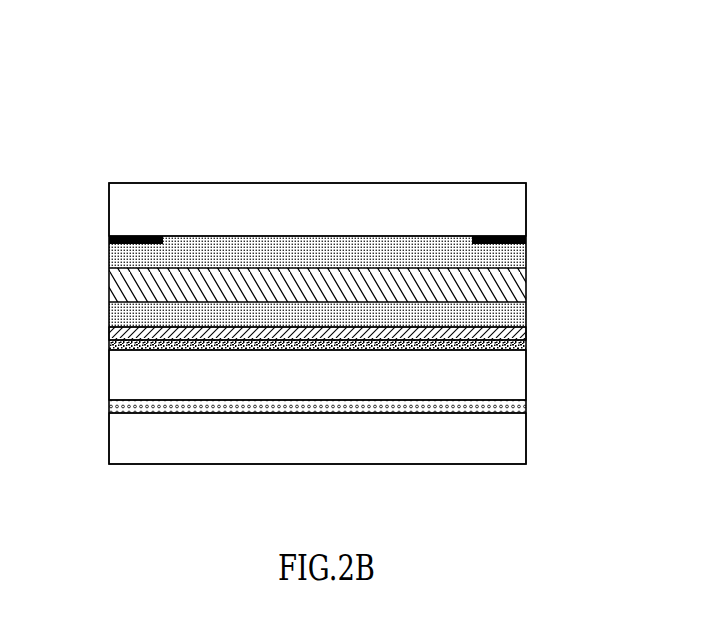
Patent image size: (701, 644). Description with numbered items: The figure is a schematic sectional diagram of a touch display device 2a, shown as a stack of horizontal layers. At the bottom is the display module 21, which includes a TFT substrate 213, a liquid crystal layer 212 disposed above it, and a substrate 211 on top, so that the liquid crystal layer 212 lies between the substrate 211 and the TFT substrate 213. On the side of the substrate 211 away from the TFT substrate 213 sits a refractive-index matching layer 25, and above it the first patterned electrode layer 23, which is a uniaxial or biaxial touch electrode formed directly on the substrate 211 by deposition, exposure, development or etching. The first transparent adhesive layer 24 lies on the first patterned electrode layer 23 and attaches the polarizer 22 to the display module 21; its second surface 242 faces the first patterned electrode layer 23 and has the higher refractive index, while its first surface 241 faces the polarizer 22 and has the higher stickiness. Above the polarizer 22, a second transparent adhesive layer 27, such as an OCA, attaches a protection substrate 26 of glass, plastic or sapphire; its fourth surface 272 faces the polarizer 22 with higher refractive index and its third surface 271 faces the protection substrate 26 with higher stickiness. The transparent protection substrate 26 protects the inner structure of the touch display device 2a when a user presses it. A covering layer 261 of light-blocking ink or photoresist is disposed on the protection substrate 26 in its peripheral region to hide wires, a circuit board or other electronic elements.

The touch display device 2a is at (180, 82).
The protection substrate 26 is at (403, 194).
The covering layer 261 is at (137, 235).
The second transparent adhesive layer 27 is at (364, 253).
The third surface 271 is at (526, 238).
The fourth surface 272 is at (526, 268).
The polarizer 22 is at (109, 285).
The first transparent adhesive layer 24 is at (364, 317).
The first surface 241 is at (526, 301).
The second surface 242 is at (526, 330).
The first patterned electrode layer 23 is at (109, 332).
The refractive-index matching layer 25 is at (109, 345).
The display module 21 is at (274, 407).
The substrate 211 is at (113, 382).
The liquid crystal layer 212 is at (113, 407).
The TFT substrate 213 is at (291, 438).